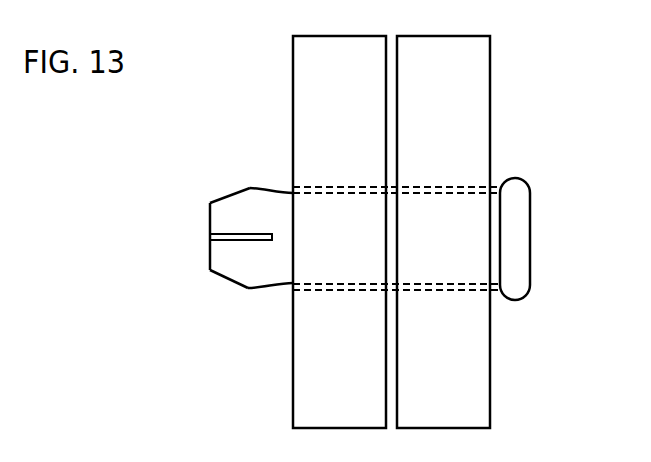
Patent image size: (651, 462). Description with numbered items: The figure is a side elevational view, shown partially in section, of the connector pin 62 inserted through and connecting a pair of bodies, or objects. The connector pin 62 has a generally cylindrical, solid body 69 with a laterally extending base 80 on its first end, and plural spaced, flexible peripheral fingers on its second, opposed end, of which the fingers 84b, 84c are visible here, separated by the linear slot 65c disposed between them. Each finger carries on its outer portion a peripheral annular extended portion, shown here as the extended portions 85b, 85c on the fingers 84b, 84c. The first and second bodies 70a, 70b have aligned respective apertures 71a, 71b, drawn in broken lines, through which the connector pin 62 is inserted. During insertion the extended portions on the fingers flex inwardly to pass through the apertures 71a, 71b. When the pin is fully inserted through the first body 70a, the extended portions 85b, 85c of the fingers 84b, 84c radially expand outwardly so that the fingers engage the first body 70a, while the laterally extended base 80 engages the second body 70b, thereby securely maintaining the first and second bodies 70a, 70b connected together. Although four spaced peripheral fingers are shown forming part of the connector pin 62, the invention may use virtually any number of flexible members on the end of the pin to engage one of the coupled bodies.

The first body 70a is at (355, 80).
The second body 70b is at (460, 80).
The aperture 71a is at (323, 177).
The aperture 71b is at (453, 188).
The laterally extending base 80 is at (518, 213).
The cylindrical body 69 is at (393, 285).
The connector pin 62 is at (281, 292).
The peripheral finger 84b is at (238, 207).
The peripheral finger 84c is at (235, 272).
The peripheral annular extended portion 85b is at (252, 187).
The peripheral annular extended portion 85c is at (248, 290).
The linear slot 65c is at (210, 237).